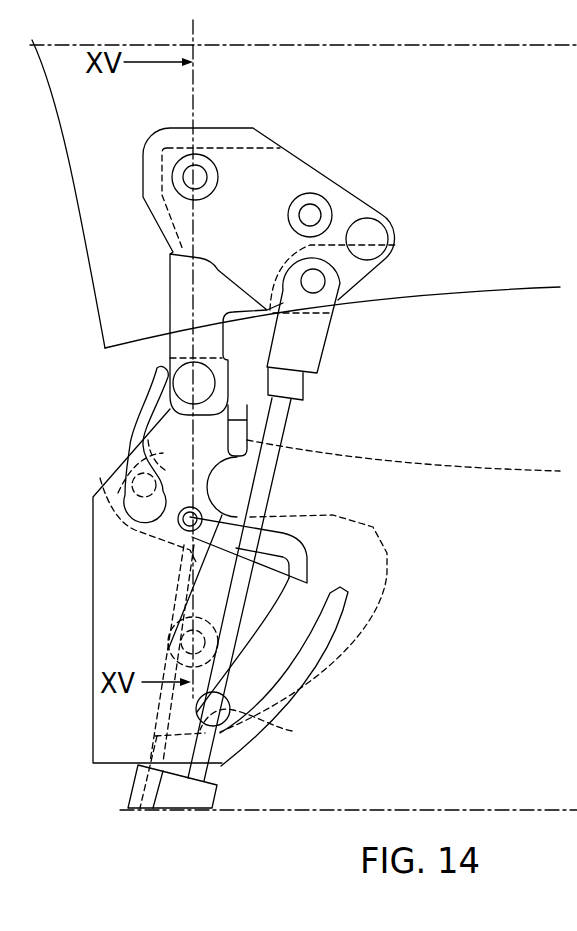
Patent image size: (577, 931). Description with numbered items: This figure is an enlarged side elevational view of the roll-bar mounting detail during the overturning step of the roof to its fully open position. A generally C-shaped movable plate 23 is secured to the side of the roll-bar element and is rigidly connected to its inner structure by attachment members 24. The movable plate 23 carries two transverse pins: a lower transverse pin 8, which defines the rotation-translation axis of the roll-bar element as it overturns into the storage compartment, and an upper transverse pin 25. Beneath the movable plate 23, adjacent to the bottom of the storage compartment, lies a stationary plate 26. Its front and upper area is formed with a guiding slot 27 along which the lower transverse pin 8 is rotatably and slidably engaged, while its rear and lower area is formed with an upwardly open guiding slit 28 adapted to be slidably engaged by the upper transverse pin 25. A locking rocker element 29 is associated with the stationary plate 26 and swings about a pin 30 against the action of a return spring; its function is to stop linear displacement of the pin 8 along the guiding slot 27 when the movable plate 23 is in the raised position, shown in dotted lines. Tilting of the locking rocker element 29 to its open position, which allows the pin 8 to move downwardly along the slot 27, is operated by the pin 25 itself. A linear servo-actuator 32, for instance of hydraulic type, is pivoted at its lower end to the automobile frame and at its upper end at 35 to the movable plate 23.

The movable plate 23 is at (350, 183).
The attachment members 24 is at (307, 214).
The upper transverse pin 25 is at (372, 232).
The upper pivot of servo-actuator 35 is at (320, 281).
The lower transverse pin 8 is at (190, 382).
The guiding slot 27 is at (132, 445).
The locking rocker element 29 is at (247, 434).
The pin 30 is at (202, 517).
The stationary plate 26 is at (84, 648).
The guiding slit 28 is at (283, 643).
The linear servo-actuator 32 is at (210, 800).